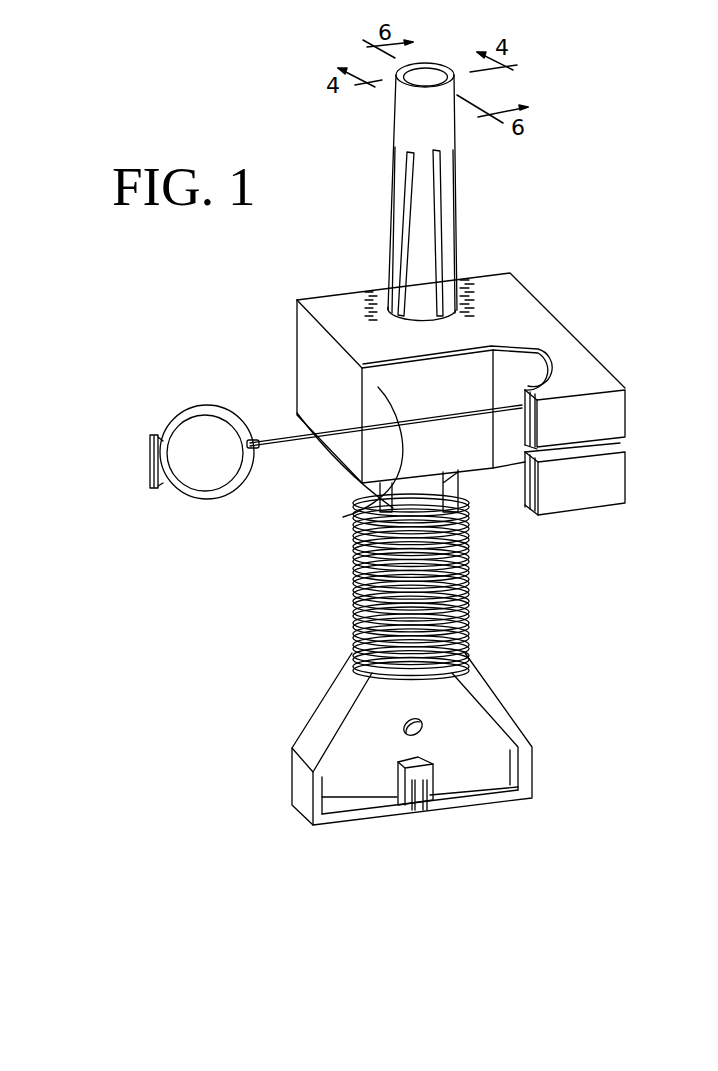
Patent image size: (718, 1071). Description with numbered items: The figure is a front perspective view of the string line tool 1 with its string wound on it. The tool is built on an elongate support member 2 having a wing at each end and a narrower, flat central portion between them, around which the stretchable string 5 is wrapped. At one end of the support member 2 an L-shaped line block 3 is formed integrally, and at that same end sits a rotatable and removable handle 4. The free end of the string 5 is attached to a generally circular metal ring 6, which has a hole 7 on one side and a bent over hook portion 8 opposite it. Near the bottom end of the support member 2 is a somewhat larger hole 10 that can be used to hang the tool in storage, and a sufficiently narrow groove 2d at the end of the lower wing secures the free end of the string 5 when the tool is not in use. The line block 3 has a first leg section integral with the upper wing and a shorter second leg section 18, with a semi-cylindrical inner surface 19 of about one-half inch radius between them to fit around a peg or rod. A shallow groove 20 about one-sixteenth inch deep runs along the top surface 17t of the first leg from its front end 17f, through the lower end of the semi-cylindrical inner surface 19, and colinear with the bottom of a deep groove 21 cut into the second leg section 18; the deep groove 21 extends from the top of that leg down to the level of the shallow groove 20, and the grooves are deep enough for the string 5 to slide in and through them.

The string line tool 1 is at (212, 615).
The support member 2 is at (403, 765).
The groove 2d is at (425, 813).
The line block 3 is at (474, 367).
The rotatable handle 4 is at (402, 210).
The string 5 is at (468, 578).
The circular metal ring 6 is at (192, 410).
The hole 7 is at (247, 445).
The hook portion 8 is at (155, 468).
The hole 10 is at (403, 720).
The front end 17f is at (322, 383).
The top surface 17t is at (387, 428).
The second leg section 18 is at (582, 385).
The semi-cylindrical inner surface 19 is at (541, 363).
The shallow groove 20 is at (393, 480).
The deep groove 21 is at (717, 375).